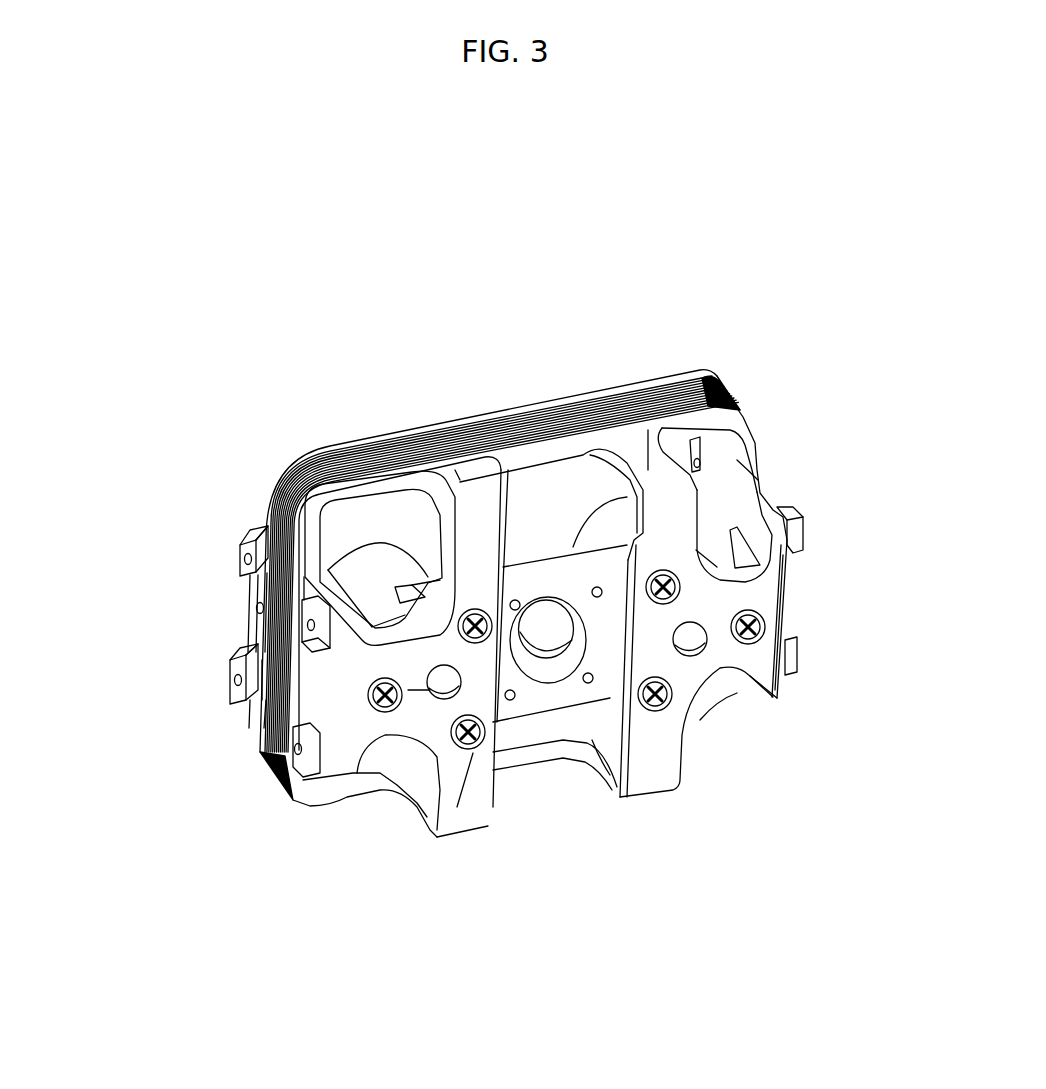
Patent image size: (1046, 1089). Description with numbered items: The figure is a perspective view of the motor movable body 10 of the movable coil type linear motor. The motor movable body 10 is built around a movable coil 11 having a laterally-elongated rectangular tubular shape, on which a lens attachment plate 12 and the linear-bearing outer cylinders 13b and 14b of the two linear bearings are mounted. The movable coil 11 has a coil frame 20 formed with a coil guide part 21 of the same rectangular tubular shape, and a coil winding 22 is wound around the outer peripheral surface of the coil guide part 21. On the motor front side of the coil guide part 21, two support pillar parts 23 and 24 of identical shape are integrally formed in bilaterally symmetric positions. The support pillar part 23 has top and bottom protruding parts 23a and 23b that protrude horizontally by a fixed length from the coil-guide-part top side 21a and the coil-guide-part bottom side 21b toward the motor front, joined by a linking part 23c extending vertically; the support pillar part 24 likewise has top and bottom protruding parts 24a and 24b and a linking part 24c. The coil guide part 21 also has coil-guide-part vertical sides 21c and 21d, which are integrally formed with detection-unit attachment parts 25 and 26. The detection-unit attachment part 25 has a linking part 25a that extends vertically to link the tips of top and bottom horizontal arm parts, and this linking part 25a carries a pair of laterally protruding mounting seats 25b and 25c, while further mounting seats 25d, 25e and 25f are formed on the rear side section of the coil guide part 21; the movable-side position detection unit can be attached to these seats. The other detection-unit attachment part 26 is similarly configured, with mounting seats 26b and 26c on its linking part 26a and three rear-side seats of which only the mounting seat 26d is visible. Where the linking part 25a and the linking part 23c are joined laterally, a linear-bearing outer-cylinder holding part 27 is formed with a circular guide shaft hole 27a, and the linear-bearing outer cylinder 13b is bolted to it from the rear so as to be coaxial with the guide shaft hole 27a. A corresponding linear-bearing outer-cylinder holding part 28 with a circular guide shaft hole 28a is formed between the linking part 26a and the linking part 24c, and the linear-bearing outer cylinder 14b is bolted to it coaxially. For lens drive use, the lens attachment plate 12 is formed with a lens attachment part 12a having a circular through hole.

The motor movable body 10 is at (436, 320).
The movable coil 11 is at (488, 393).
The lens attachment plate 12 is at (547, 558).
The lens attachment part 12a is at (553, 617).
The linear-bearing outer cylinder 13b is at (380, 560).
The linear-bearing outer cylinder 14b is at (627, 520).
The coil frame 20 is at (302, 446).
The coil guide part 21 is at (269, 483).
The coil-guide-part top side 21a is at (460, 437).
The coil-guide-part bottom side 21b is at (527, 728).
The coil-guide-part vertical side 21c is at (283, 527).
The coil-guide-part vertical side 21d is at (720, 467).
The coil winding 22 is at (287, 507).
The support pillar part 23 is at (497, 704).
The top protruding part 23a is at (460, 493).
The bottom protruding part 23b is at (403, 802).
The linking part 23c is at (430, 790).
The support pillar part 24 is at (620, 658).
The top protruding part 24a is at (653, 457).
The bottom protruding part 24b is at (598, 768).
The linking part 24c is at (652, 633).
The detection-unit attachment part 25 is at (112, 550).
The linking part 25a is at (267, 673).
The mounting seat 25b is at (280, 632).
The mounting seat 25c is at (257, 753).
The mounting seat 25d is at (243, 538).
The mounting seat 25e is at (253, 605).
The mounting seat 25f is at (232, 685).
The detection-unit attachment part 26 is at (887, 460).
The linking part 26a is at (790, 588).
The mounting seat 26b is at (800, 533).
The mounting seat 26c is at (788, 670).
The mounting seat 26d is at (750, 488).
The linear-bearing outer-cylinder holding part 27 is at (400, 727).
The guide shaft hole 27a is at (378, 714).
The linear-bearing outer-cylinder holding part 28 is at (715, 662).
The guide shaft hole 28a is at (683, 657).